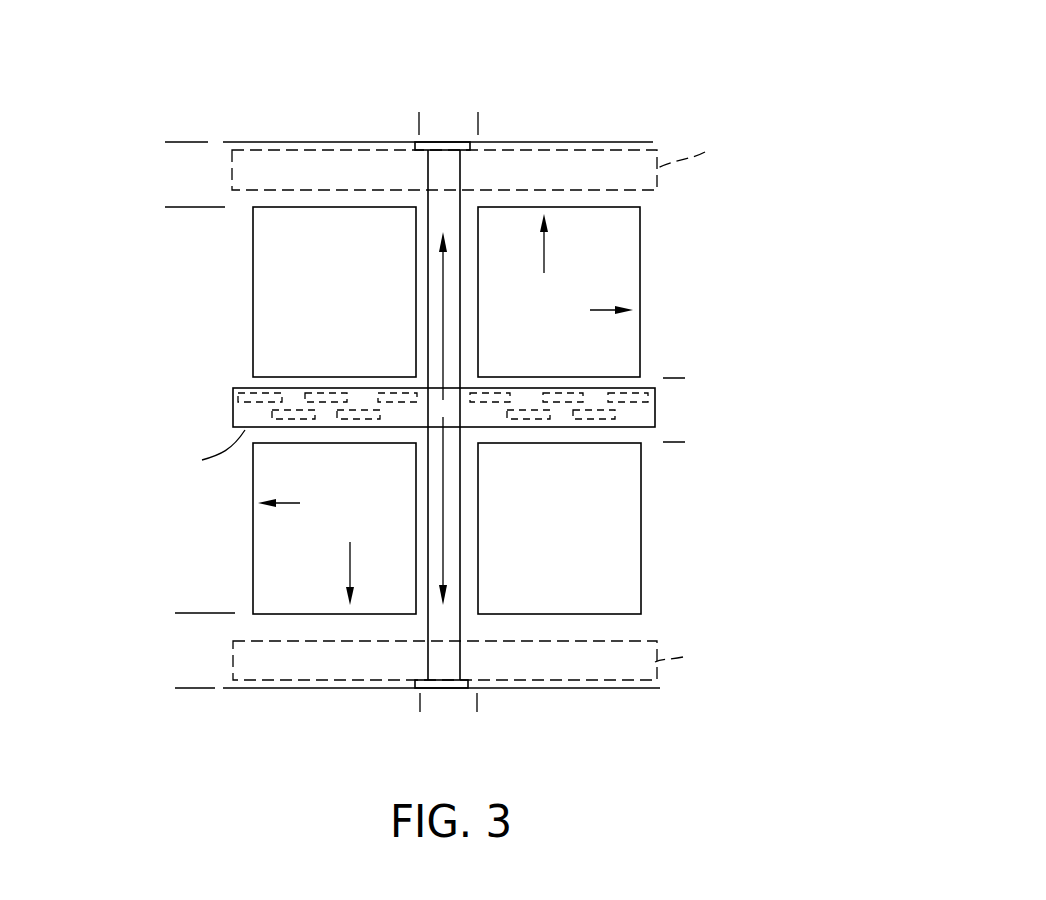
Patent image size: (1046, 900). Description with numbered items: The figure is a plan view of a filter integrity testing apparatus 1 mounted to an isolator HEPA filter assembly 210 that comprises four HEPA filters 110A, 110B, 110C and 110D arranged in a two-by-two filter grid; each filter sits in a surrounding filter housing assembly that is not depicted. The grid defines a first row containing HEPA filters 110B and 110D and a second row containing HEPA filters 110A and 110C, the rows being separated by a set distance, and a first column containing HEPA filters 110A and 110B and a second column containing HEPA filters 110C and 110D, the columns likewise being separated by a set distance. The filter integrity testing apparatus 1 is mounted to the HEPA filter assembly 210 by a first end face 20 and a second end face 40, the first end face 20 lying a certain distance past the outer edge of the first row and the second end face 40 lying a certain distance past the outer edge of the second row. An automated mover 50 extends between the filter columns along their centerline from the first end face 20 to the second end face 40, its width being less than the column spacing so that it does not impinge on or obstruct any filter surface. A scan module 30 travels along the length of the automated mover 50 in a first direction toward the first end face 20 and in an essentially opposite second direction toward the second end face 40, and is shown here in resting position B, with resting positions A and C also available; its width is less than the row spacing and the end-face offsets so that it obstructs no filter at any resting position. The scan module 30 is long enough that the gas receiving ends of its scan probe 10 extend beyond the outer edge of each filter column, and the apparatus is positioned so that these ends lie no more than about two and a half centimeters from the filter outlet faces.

The filter integrity testing apparatus 1 is at (456, 366).
The scan probe 10 is at (258, 388).
The first end face 20 is at (415, 682).
The scan module 30 is at (440, 382).
The second end face 40 is at (466, 148).
The automated mover 50 is at (462, 624).
The HEPA filter 110A is at (272, 290).
The HEPA filter 110B is at (262, 558).
The HEPA filter 110C is at (598, 272).
The HEPA filter 110D is at (630, 508).
The isolator HEPA filter assembly 210 is at (340, 142).